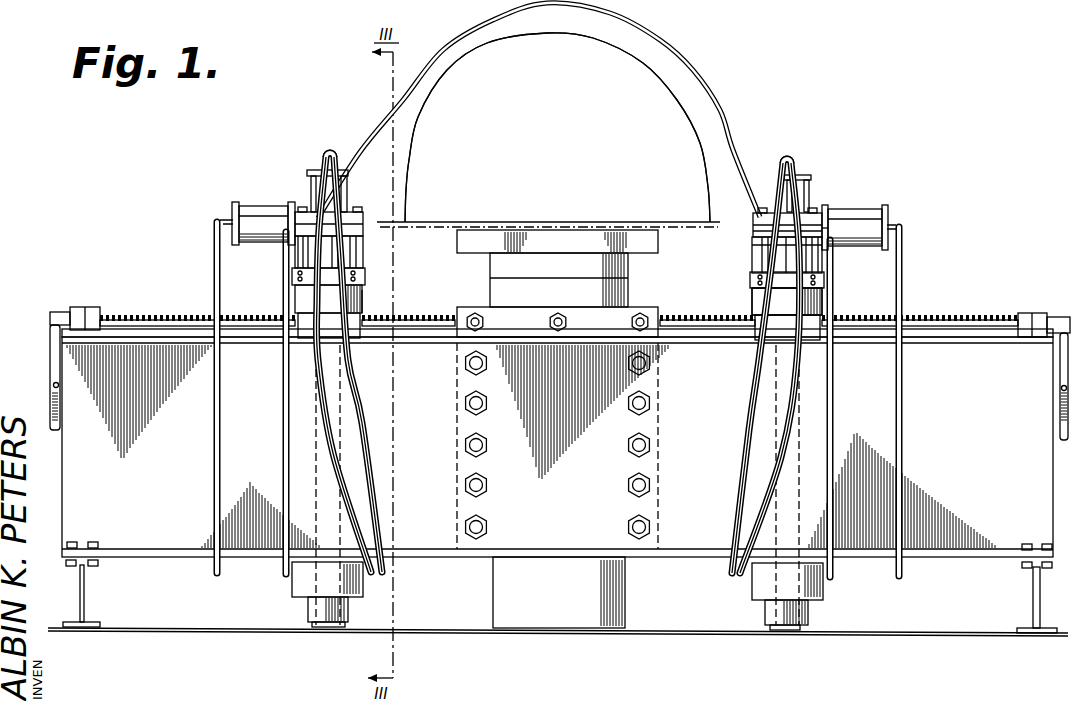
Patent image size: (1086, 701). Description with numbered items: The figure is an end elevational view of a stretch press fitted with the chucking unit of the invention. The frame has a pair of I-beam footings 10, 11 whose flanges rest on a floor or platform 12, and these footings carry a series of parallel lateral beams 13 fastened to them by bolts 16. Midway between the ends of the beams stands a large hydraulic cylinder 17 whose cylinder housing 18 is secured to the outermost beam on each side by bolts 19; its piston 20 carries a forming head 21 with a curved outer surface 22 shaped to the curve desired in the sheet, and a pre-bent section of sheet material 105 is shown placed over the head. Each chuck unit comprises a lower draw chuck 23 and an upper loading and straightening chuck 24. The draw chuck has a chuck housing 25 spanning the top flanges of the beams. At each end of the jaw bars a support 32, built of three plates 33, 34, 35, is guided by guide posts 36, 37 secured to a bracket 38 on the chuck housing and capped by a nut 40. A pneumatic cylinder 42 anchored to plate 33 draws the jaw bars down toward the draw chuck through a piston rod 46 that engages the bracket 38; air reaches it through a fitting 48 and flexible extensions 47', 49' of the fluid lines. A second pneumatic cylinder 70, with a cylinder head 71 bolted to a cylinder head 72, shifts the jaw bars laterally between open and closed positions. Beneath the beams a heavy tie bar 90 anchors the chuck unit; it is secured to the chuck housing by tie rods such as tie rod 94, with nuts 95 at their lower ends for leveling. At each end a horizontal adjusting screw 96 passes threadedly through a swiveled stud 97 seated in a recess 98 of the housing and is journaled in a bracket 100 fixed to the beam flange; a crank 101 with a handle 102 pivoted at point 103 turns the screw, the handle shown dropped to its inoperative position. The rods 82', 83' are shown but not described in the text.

The footing 10 is at (1033, 605).
The footing 11 is at (86, 606).
The floor or platform 12 is at (688, 636).
The lateral beam 13 is at (175, 500).
The bolts 16 is at (94, 546).
The hydraulic cylinder 17 is at (625, 600).
The cylinder housing 18 is at (660, 316).
The bolts 19 is at (488, 483).
The piston 20 is at (628, 270).
The forming head 21 is at (660, 92).
The curved outer surface 22 is at (742, 163).
The draw chuck 23 is at (826, 304).
The loading and straightening chuck 24 is at (815, 203).
The chuck housing 25 is at (297, 296).
The support 32 is at (367, 212).
The plate 33 is at (755, 225).
The plate 34 is at (753, 228).
The plate 35 is at (756, 240).
The guide post 36 is at (353, 253).
The guide post 37 is at (298, 250).
The bracket 38 is at (365, 277).
The nut 40 is at (758, 210).
The pneumatic cylinder 42 is at (310, 175).
The piston rod 46 is at (334, 245).
The flexible extension 47' is at (557, 363).
The fitting 48 is at (329, 150).
The flexible extension 49' is at (557, 363).
The pneumatic cylinder 70 is at (259, 201).
The cylinder head 71 is at (823, 210).
The cylinder head 72 is at (232, 204).
The rod 82' is at (582, 398).
The rod 83' is at (557, 404).
The tie bar 90 is at (292, 585).
The tie rod 94 is at (322, 628).
The nut 95 is at (308, 612).
The horizontal adjusting screw 96 is at (150, 316).
The swiveled stud 97 is at (300, 338).
The recess 98 is at (363, 305).
The bracket 100 is at (80, 308).
The crank 101 is at (50, 326).
The handle 102 is at (52, 408).
The pivot point 103 is at (54, 384).
The section of sheet material 105 is at (740, 135).